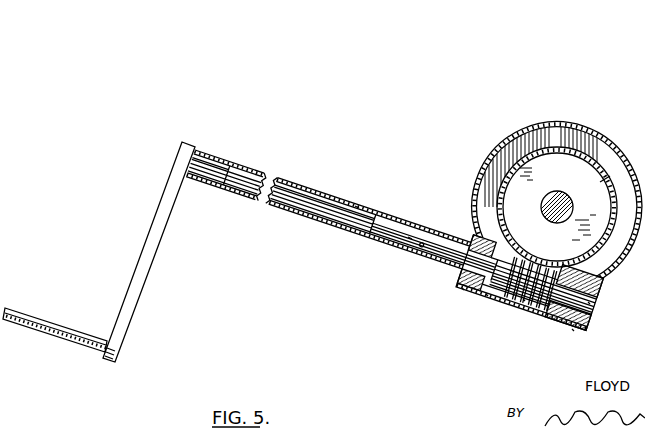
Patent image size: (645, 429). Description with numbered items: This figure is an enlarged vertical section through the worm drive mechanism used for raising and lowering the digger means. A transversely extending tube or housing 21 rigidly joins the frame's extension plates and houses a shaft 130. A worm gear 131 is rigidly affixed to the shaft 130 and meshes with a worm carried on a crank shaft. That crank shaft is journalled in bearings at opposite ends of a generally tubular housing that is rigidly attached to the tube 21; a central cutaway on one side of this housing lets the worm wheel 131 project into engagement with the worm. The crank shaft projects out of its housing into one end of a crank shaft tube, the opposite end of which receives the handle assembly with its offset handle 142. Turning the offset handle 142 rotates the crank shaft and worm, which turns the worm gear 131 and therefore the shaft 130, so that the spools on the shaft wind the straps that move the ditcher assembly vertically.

The tube or housing 21 is at (614, 153).
The shaft 130 is at (556, 192).
The worm gear 131 is at (600, 182).
The offset handle 142 is at (65, 330).